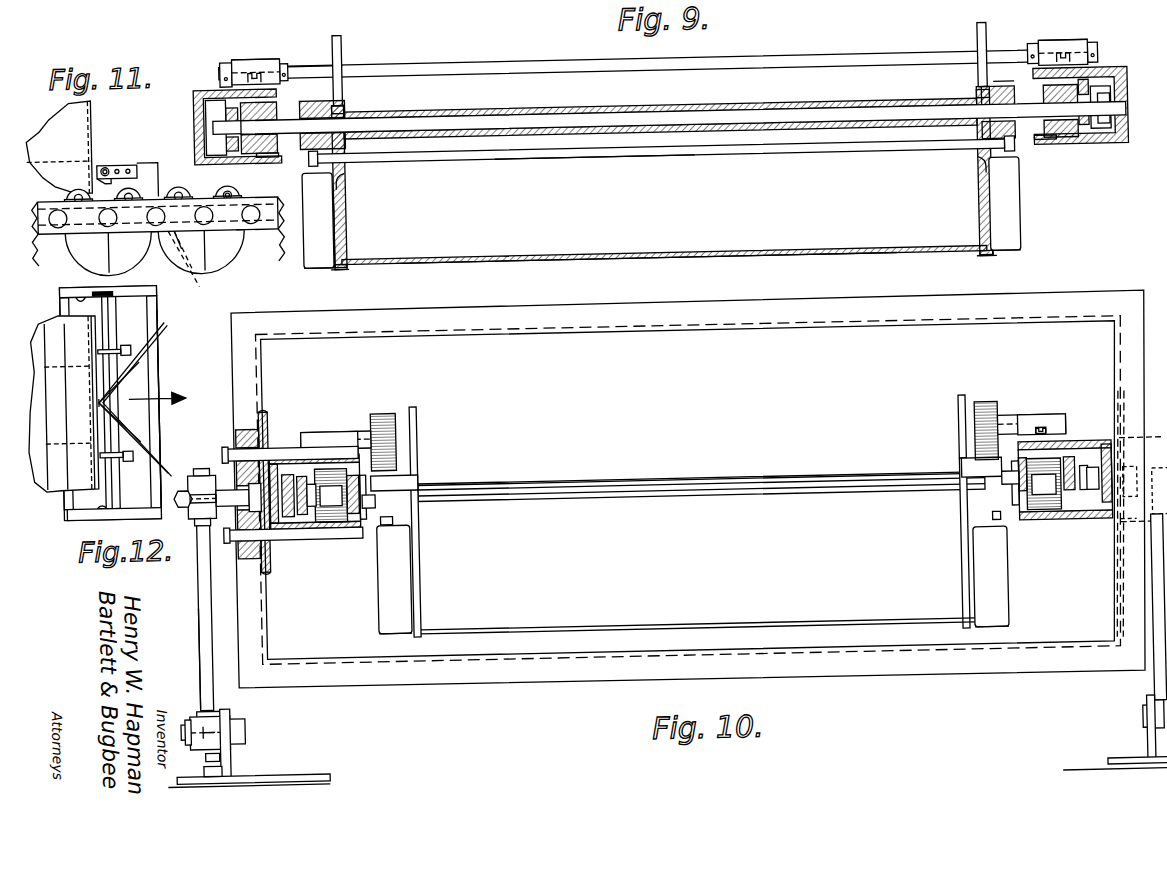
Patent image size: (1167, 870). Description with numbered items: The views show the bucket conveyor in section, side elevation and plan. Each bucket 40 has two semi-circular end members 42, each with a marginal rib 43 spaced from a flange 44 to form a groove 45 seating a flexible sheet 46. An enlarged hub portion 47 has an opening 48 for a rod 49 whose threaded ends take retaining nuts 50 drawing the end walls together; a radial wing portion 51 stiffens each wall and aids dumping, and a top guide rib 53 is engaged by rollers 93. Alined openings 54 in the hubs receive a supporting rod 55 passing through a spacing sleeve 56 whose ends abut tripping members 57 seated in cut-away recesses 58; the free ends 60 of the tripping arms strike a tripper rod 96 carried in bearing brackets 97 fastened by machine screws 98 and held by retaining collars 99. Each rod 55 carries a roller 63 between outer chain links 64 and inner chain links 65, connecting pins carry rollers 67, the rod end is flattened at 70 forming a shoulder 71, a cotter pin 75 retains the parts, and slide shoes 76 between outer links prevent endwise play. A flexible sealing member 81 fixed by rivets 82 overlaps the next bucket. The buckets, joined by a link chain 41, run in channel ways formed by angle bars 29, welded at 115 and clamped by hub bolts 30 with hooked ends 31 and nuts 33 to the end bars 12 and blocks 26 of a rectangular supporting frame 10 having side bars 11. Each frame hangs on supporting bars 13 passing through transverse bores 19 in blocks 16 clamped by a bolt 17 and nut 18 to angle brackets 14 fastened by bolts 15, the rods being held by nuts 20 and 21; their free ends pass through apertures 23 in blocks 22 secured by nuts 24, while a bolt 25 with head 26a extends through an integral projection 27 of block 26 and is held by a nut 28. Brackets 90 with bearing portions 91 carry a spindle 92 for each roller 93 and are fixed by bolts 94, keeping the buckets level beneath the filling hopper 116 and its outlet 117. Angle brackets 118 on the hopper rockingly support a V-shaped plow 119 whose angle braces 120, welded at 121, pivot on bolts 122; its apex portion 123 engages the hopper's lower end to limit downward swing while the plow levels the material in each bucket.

In FIG. 10, the rectangular supporting frame 10 is at (806, 672).
In FIG. 10, the side bars 11 is at (653, 328).
In FIG. 10, the end bars 12 is at (264, 334).
In FIG. 10, the supporting bars 13 is at (193, 634).
In FIG. 10, the angle brackets 14 is at (238, 760).
In FIG. 10, the bolts 15 is at (210, 771).
In FIG. 10, the spaced blocks 16 is at (180, 723).
In FIG. 10, the bolt 17 is at (236, 720).
In FIG. 10, the nut 18 is at (190, 708).
In FIG. 10, the transverse bores 19 is at (224, 712).
In FIG. 10, the nut 20 is at (205, 700).
In FIG. 10, the nut 21 is at (223, 758).
In FIG. 10, the blocks 22 is at (192, 467).
In FIG. 10, the transverse apertures 23 is at (178, 490).
In FIG. 10, the nuts 24 is at (200, 460).
In FIG. 10, the bolt 25 is at (235, 471).
In FIG. 10, the block 26 is at (258, 438).
In FIG. 10, the bolt head 26a is at (286, 552).
In FIG. 10, the integral projection 27 is at (236, 540).
In FIG. 10, the nut 28 is at (186, 500).
In FIG. 10, the angle bars 29 is at (288, 465).
In FIG. 11, the angle bars 29 is at (225, 235).
In FIG. 10, the hub bolts 30 is at (290, 449).
In FIG. 10, the hooked end 31 is at (352, 455).
In FIG. 10, the nuts 33 is at (232, 442).
In FIG. 9, the buckets 40 is at (623, 261).
In FIG. 10, the buckets 40 is at (676, 626).
In FIG. 11, the buckets 40 is at (63, 240).
In FIG. 12, the buckets 40 is at (172, 344).
In FIG. 11, the link chain 41 is at (240, 222).
In FIG. 9, the end members 42 is at (310, 211).
In FIG. 10, the end members 42 is at (408, 576).
In FIG. 11, the end members 42 is at (280, 213).
In FIG. 12, the end members 42 is at (132, 277).
In FIG. 9, the marginal rib 43 is at (348, 264).
In FIG. 12, the marginal rib 43 is at (130, 498).
In FIG. 9, the flange 44 is at (348, 252).
In FIG. 9, the groove 45 is at (340, 266).
In FIG. 9, the flexible sheet 46 is at (545, 254).
In FIG. 10, the flexible sheet 46 is at (771, 626).
In FIG. 12, the flexible sheet 46 is at (159, 297).
In FIG. 9, the hub portion 47 is at (302, 60).
In FIG. 10, the hub portion 47 is at (690, 487).
In FIG. 9, the opening 48 is at (352, 178).
In FIG. 9, the rod 49 is at (618, 164).
In FIG. 9, the retaining nuts 50 is at (314, 155).
In FIG. 10, the retaining nuts 50 is at (691, 517).
In FIG. 9, the wing portion 51 is at (307, 250).
In FIG. 10, the wing portion 51 is at (374, 604).
In FIG. 11, the wing portion 51 is at (113, 238).
In FIG. 10, the guide rib 53 is at (416, 482).
In FIG. 12, the guide rib 53 is at (122, 285).
In FIG. 9, the alined openings 54 is at (320, 95).
In FIG. 9, the supporting rod 55 is at (566, 117).
In FIG. 10, the supporting rod 55 is at (308, 480).
In FIG. 11, the supporting rod 55 is at (188, 262).
In FIG. 9, the spacing sleeve 56 is at (670, 106).
In FIG. 12, the spacing sleeve 56 is at (117, 295).
In FIG. 9, the bucket tripping members 57 is at (349, 88).
In FIG. 10, the bucket tripping members 57 is at (416, 442).
In FIG. 12, the bucket tripping members 57 is at (82, 281).
In FIG. 9, the cut-away recesses 58 is at (350, 103).
In FIG. 9, the free ends 60 is at (350, 33).
In FIG. 10, the free ends 60 is at (416, 411).
In FIG. 9, the rollers 63 is at (280, 97).
In FIG. 10, the rollers 63 is at (687, 489).
In FIG. 11, the rollers 63 is at (182, 240).
In FIG. 9, the outer chain links 64 is at (227, 85).
In FIG. 10, the outer chain links 64 is at (335, 520).
In FIG. 9, the inner chain links 65 is at (268, 150).
In FIG. 10, the inner chain links 65 is at (362, 530).
In FIG. 11, the rollers 67 is at (163, 222).
In FIG. 9, the flattened portion 70 is at (212, 118).
In FIG. 9, the shoulder 71 is at (245, 118).
In FIG. 9, the cotter pins 75 is at (1122, 130).
In FIG. 10, the cotter pins 75 is at (300, 508).
In FIG. 9, the slide shoes 76 is at (200, 90).
In FIG. 10, the slide shoes 76 is at (285, 510).
In FIG. 11, the slide shoes 76 is at (240, 185).
In FIG. 10, the flexible sealing member 81 is at (653, 480).
In FIG. 10, the rivets 82 is at (435, 496).
In FIG. 10, the brackets 90 is at (345, 426).
In FIG. 11, the brackets 90 is at (190, 188).
In FIG. 10, the bearing portions 91 is at (313, 426).
In FIG. 10, the spindle 92 is at (340, 430).
In FIG. 10, the roller 93 is at (383, 409).
In FIG. 11, the roller 93 is at (160, 176).
In FIG. 10, the bolts 94 is at (330, 445).
In FIG. 9, the tripper rod 96 is at (486, 59).
In FIG. 9, the bearing brackets 97 is at (268, 52).
In FIG. 9, the machine screws 98 is at (253, 62).
In FIG. 9, the retaining collars 99 is at (230, 55).
In FIG. 10, the welds 115 is at (276, 457).
In FIG. 11, the filling hopper 116 is at (98, 108).
In FIG. 12, the filling hopper 116 is at (62, 403).
In FIG. 11, the outlet 117 is at (52, 175).
In FIG. 12, the outlet 117 is at (80, 362).
In FIG. 12, the angle brackets 118 is at (120, 339).
In FIG. 11, the V-shaped plow 119 is at (155, 155).
In FIG. 12, the V-shaped plow 119 is at (136, 365).
In FIG. 11, the angle braces 120 is at (125, 158).
In FIG. 12, the angle braces 120 is at (130, 337).
In FIG. 12, the weld 121 is at (160, 332).
In FIG. 11, the bolts 122 is at (108, 160).
In FIG. 12, the bolts 122 is at (132, 358).
In FIG. 11, the apex portion 123 is at (112, 155).
In FIG. 12, the apex portion 123 is at (112, 394).